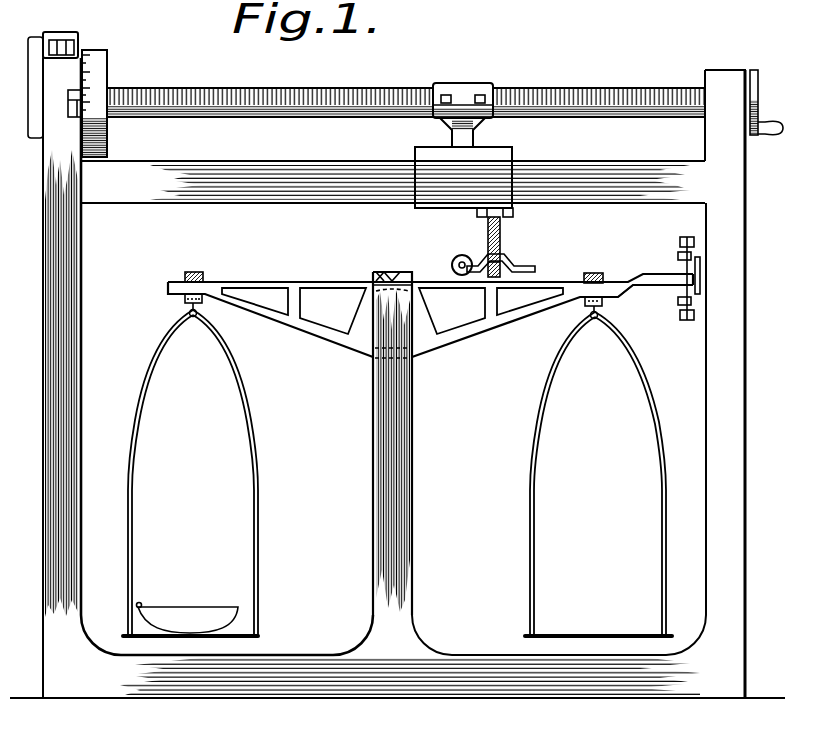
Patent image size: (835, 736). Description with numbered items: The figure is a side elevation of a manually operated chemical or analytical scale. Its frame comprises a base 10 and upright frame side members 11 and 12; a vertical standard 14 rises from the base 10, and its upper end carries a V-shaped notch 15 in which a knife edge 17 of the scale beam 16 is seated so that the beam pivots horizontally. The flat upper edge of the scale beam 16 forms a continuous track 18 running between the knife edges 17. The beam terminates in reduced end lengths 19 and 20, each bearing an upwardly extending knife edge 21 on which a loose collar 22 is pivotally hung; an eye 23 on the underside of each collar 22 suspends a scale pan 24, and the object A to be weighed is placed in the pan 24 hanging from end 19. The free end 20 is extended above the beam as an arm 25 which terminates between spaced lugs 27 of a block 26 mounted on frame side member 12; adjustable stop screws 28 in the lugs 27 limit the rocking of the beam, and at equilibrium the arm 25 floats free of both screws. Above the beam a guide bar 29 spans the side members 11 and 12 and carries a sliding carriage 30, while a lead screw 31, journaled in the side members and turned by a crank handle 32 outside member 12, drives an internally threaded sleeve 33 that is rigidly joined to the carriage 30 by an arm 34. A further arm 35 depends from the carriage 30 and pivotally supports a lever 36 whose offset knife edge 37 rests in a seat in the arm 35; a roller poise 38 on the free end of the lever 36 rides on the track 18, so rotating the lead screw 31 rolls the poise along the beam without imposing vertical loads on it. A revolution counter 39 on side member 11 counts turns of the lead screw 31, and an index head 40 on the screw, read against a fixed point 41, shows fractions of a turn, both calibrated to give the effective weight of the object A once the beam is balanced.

The base 10 is at (302, 688).
The frame side member 11 is at (65, 338).
The frame side member 12 is at (733, 355).
The standard 14 is at (398, 461).
The notch 15 is at (386, 271).
The scale beam 16 is at (478, 327).
The knife edge 17 is at (394, 271).
The track 18 is at (372, 280).
The reduced end length 19 is at (172, 281).
The reduced end length 20 is at (608, 292).
The knife edge 21 is at (200, 278).
The collar 22 is at (190, 271).
The eye 23 is at (195, 319).
The scale pan 24 is at (258, 601).
The arm 25 is at (645, 282).
The block 26 is at (703, 277).
The lug 27 is at (697, 251).
The stop screw 28 is at (682, 239).
The guide bar 29 is at (645, 170).
The carriage 30 is at (500, 153).
The lead screw 31 is at (498, 91).
The crank handle 32 is at (757, 113).
The sleeve 33 is at (468, 90).
The arm 34 is at (472, 131).
The arm 35 is at (502, 232).
The lever 36 is at (508, 263).
The knife edge 37 is at (485, 262).
The roller poise 38 is at (453, 259).
The revolution counter 39 is at (35, 48).
The index head 40 is at (108, 60).
The fixed point 41 is at (104, 142).
The object A is at (182, 610).